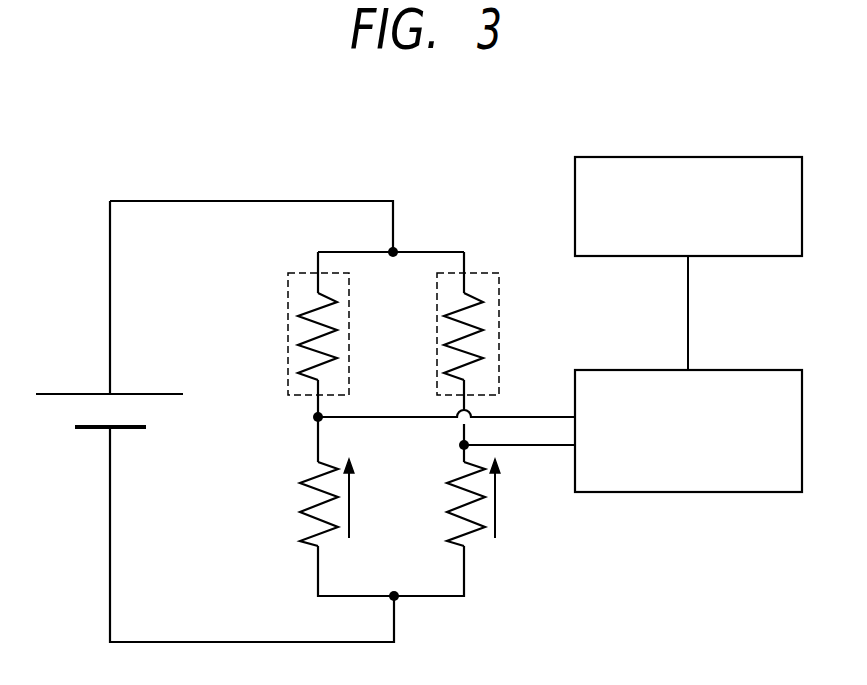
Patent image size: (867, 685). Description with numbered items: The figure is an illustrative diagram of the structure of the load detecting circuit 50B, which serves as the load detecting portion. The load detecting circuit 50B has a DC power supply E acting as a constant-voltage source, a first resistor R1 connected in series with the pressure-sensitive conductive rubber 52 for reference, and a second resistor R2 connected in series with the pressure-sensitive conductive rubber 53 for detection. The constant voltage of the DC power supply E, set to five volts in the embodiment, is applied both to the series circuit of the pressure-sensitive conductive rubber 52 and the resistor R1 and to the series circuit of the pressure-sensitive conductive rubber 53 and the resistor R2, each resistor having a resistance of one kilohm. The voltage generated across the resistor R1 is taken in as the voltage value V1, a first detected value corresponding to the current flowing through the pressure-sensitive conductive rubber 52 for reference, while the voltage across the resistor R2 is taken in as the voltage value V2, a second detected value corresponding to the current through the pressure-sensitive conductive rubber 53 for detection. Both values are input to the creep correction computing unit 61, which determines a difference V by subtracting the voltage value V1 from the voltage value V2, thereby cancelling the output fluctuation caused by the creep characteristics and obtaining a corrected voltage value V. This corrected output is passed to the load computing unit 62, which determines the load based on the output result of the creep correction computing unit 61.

The load detecting circuit 50B is at (474, 153).
The pressure-sensitive conductive rubber for reference 52 is at (349, 341).
The pressure-sensitive conductive rubber for detection 53 is at (499, 341).
The creep correction computing unit 61 is at (752, 370).
The load computing unit 62 is at (750, 157).
The DC power supply E is at (72, 394).
The first resistor R1 is at (300, 504).
The second resistor R2 is at (447, 504).
The voltage value V1 is at (353, 497).
The voltage value V2 is at (500, 515).
The difference (corrected voltage value) V is at (676, 313).